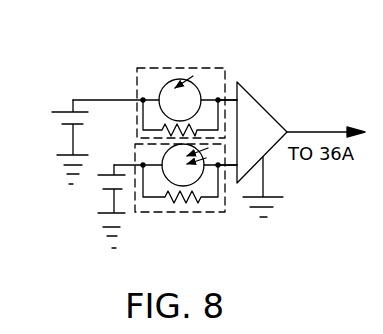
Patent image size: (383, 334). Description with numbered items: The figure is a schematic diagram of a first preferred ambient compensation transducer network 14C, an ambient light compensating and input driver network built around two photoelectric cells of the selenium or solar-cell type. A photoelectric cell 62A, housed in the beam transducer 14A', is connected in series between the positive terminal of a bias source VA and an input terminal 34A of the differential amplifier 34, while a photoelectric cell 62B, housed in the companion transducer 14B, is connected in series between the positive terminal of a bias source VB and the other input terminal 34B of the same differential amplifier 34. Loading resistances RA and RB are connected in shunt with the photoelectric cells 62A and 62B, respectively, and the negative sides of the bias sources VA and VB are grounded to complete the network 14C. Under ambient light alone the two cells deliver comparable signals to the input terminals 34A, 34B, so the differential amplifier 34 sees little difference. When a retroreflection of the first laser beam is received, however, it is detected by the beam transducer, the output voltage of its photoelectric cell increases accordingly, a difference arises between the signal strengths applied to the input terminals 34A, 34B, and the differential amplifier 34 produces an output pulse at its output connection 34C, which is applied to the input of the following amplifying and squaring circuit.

The ambient compensation transducer network 14C is at (136, 112).
The beam transducer 14B is at (145, 67).
The beam transducer 14A' is at (180, 194).
The photoelectric cell 62B is at (190, 100).
The photoelectric cell 62A is at (163, 173).
The loading resistance RB is at (154, 107).
The loading resistance RA is at (178, 200).
The bias source VB is at (57, 118).
The bias source VA is at (94, 190).
The differential amplifier 34 is at (263, 147).
The input terminal 34B is at (219, 99).
The input terminal 34A is at (219, 167).
The output connection 34C is at (318, 131).